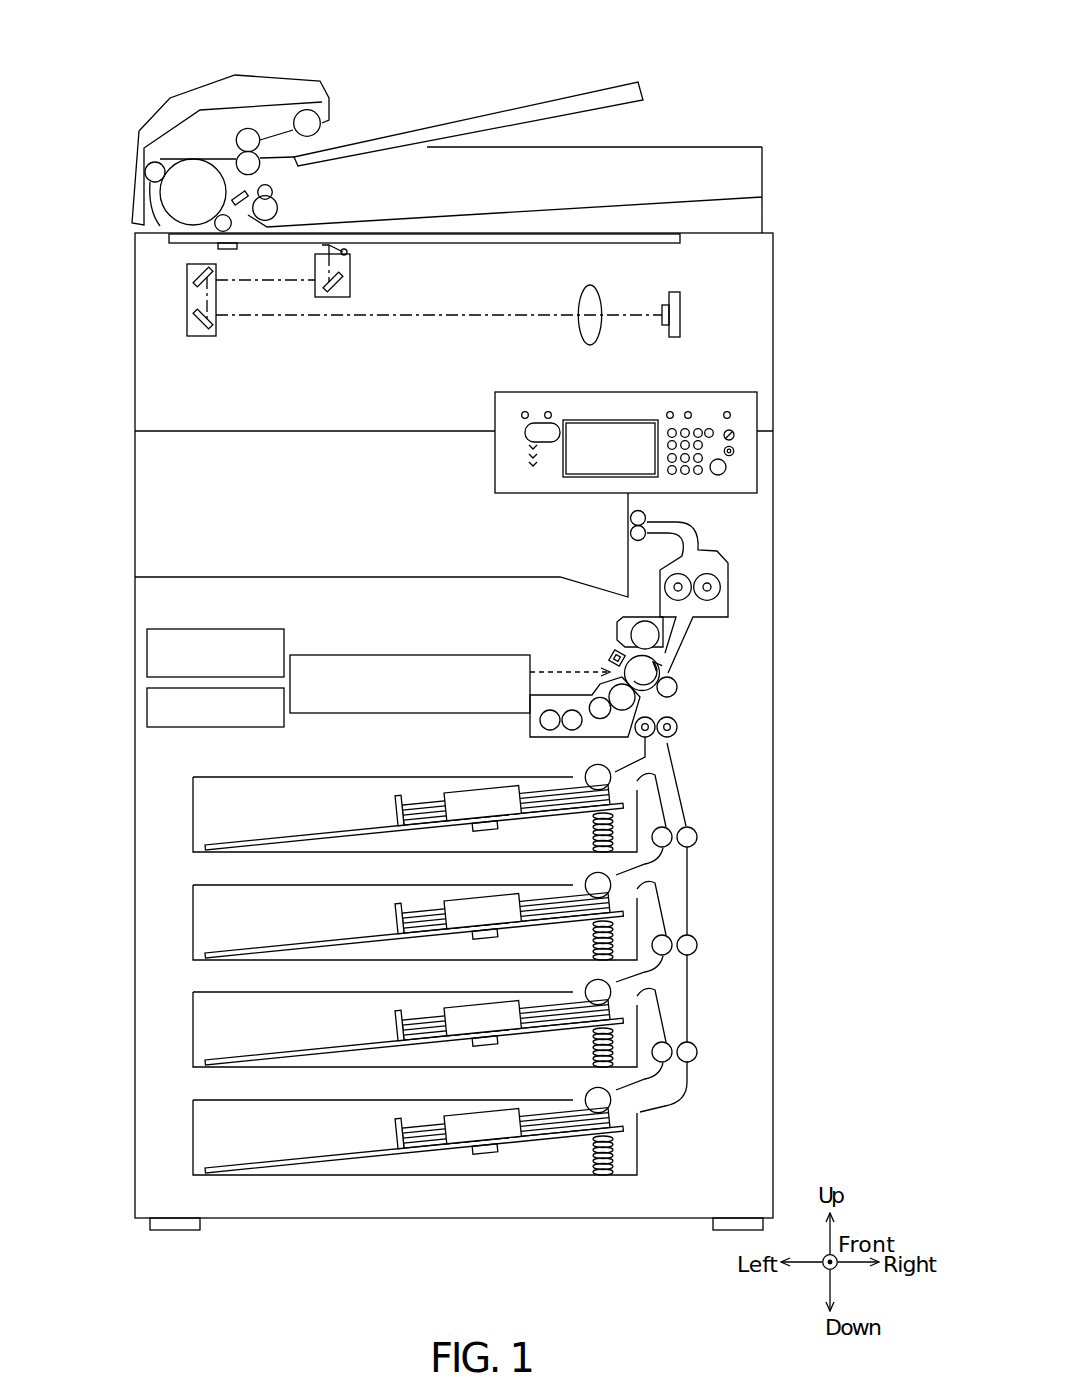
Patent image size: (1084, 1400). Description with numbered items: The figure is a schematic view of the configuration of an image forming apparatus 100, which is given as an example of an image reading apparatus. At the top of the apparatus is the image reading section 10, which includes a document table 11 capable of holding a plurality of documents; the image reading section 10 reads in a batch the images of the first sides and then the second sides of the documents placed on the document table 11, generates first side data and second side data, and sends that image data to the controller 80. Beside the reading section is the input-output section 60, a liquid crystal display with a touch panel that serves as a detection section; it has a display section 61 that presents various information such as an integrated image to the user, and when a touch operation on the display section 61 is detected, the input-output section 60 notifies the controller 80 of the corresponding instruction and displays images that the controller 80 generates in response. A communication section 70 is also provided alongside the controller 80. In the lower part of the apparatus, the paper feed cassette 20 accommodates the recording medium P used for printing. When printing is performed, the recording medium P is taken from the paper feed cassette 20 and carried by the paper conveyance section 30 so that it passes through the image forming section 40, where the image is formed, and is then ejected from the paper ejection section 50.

The image forming apparatus 100 is at (713, 66).
The document table 11 is at (671, 232).
The image reading section 10 is at (299, 352).
The input-output section 60 is at (757, 411).
The display section 61 is at (622, 419).
The paper ejection section 50 is at (626, 525).
The communication section 70 is at (147, 648).
The controller 80 is at (147, 700).
The image forming section 40 is at (709, 718).
The paper feed cassette 20 is at (120, 773).
The recording medium P is at (481, 962).
The paper conveyance section 30 is at (711, 1124).